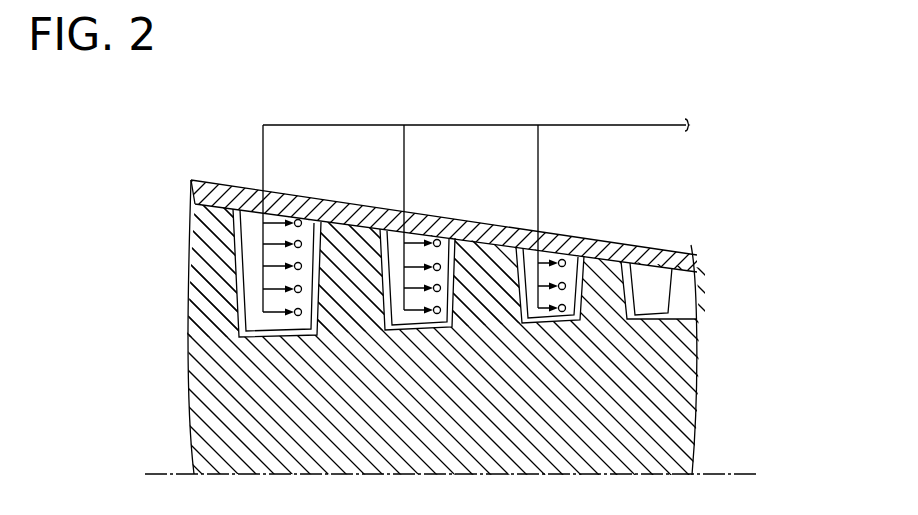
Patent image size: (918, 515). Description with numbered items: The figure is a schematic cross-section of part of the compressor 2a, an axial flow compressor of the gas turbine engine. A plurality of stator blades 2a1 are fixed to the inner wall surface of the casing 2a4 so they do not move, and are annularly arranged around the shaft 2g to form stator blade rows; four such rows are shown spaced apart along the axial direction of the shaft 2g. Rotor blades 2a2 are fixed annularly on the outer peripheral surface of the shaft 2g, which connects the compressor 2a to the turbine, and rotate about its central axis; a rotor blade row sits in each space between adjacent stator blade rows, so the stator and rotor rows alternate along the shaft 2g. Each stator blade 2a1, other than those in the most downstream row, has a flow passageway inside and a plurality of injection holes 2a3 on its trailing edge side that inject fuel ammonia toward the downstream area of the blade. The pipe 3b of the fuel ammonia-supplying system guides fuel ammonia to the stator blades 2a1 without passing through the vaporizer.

The compressor 2a is at (738, 390).
The shaft 2g is at (188, 388).
The stator blade 2a1 is at (255, 220).
The rotor blade 2a2 is at (205, 243).
The injection hole 2a3 is at (301, 291).
The casing 2a4 is at (212, 184).
The pipe 3b is at (628, 126).